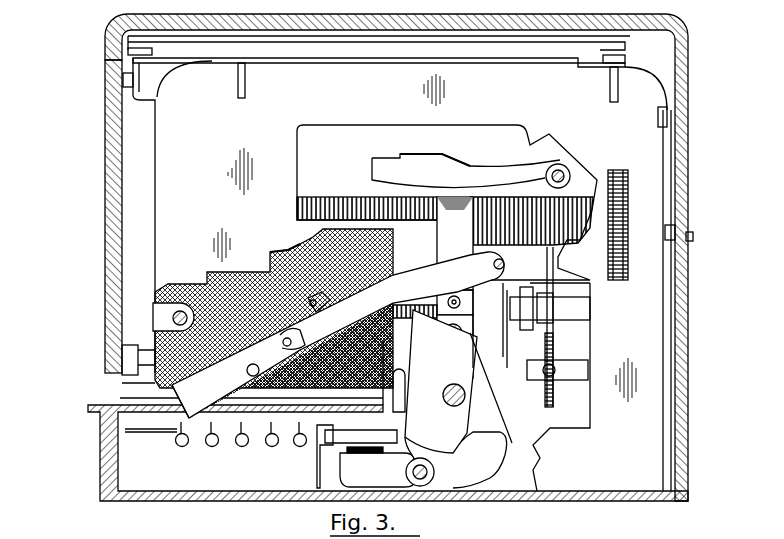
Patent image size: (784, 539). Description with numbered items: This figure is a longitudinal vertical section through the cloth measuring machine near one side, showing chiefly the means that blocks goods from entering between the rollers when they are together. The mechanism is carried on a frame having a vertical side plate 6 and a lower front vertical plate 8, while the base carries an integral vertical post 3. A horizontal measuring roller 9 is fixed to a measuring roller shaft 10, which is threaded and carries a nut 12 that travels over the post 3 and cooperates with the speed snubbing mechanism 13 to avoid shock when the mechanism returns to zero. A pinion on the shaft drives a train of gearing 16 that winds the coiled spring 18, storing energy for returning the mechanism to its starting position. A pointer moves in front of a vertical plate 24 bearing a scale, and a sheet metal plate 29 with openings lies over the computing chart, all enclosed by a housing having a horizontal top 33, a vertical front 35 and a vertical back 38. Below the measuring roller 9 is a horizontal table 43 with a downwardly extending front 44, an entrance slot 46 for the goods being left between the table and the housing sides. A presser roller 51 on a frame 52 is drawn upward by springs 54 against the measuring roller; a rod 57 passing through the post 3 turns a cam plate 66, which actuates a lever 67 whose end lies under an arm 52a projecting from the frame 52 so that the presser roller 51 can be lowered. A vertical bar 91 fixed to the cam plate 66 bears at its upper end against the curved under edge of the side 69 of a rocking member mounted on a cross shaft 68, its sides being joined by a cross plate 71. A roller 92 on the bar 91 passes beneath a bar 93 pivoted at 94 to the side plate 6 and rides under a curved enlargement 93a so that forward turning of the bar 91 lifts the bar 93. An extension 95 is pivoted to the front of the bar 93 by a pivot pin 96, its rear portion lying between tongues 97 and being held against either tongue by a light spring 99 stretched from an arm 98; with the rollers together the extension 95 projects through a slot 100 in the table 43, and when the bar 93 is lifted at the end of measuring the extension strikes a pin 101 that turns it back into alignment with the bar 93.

The vertical post 3 is at (498, 378).
The vertical side plate 6 is at (379, 66).
The front vertical plate 8 is at (152, 305).
The measuring roller 9 is at (300, 243).
The measuring roller shaft 10 is at (423, 318).
The nut 12 is at (490, 329).
The speed snubbing mechanism 13 is at (552, 311).
The train of gearing 16 is at (618, 206).
The coiled spring 18 is at (345, 200).
The vertical plate 24 is at (130, 204).
The sheet metal plate 29 is at (469, 46).
The horizontal top 33 is at (566, 24).
The vertical front 35 is at (110, 113).
The vertical back 38 is at (698, 236).
The horizontal table 43 is at (292, 417).
The front 44 is at (110, 452).
The entrance slot 46 is at (112, 372).
The presser roller 51 is at (172, 399).
The presser roller frame 52 is at (330, 455).
The arm 52a is at (377, 470).
The springs 54 is at (210, 428).
The rod 57 is at (452, 406).
The cam plate 66 is at (486, 403).
The lever 67 is at (443, 484).
The cross shaft 68 is at (560, 168).
The side 69 is at (491, 180).
The cross plate 71 is at (440, 160).
The vertical bar 91 is at (445, 257).
The roller or pin 92 is at (449, 298).
The bar 93 is at (450, 266).
The enlargement 93a is at (437, 356).
The pivot 94 is at (482, 268).
The extension 95 is at (188, 418).
The pivot pin 96 is at (248, 372).
The tongues 97 is at (296, 343).
The arm 98 is at (318, 308).
The light spring 99 is at (270, 270).
The slot or opening 100 is at (228, 418).
The pin 101 is at (180, 310).